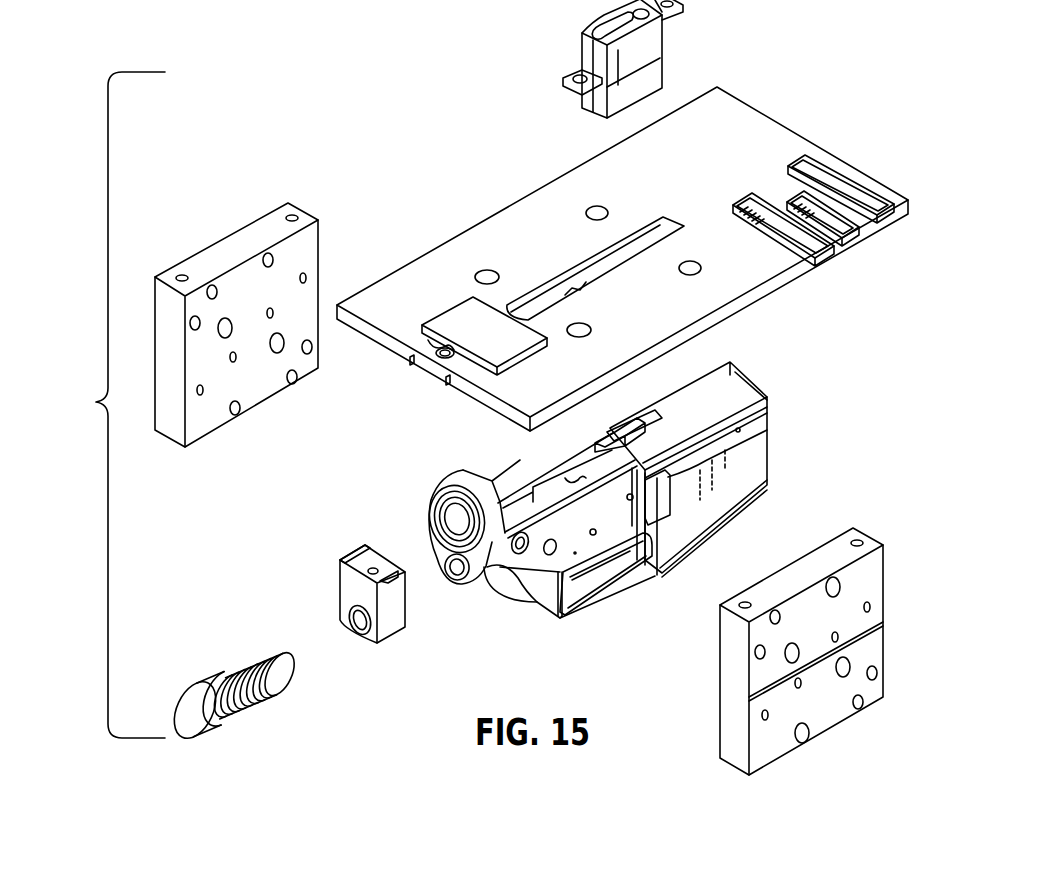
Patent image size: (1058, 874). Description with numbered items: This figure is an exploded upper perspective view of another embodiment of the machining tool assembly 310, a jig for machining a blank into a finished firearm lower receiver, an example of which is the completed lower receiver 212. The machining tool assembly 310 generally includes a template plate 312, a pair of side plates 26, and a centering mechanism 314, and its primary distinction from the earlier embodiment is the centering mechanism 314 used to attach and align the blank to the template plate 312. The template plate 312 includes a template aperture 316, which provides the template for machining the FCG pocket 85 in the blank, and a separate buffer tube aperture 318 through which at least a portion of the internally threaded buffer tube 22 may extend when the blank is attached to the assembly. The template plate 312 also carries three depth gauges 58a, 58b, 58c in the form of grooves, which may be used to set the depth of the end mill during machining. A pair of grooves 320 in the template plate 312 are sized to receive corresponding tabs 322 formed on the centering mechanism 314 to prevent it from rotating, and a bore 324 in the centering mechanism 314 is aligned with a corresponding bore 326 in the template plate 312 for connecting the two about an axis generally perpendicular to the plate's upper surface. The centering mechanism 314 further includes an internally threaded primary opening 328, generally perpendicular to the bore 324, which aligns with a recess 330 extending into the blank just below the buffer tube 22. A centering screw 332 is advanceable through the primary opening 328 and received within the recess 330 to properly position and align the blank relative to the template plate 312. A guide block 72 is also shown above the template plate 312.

The buffer tube 22 is at (629, 494).
The side plates 26 is at (228, 229).
The depth gauge 58a is at (797, 238).
The depth gauge 58b is at (830, 224).
The depth gauge 58c is at (872, 205).
The drill guide block 72 is at (570, 41).
The FCG pocket 85 is at (575, 478).
The completed lower receiver 212 is at (782, 439).
The machining tool assembly 310 is at (104, 405).
The template plate 312 is at (727, 122).
The centering mechanism 314 is at (350, 606).
The template aperture 316 is at (600, 266).
The buffer tube aperture 318 is at (487, 335).
The grooves 320 is at (409, 366).
The tabs 322 is at (345, 558).
The bore 324 is at (373, 567).
The bore 326 is at (447, 346).
The primary opening 328 is at (356, 632).
The recess 330 is at (452, 582).
The centering screw 332 is at (225, 653).